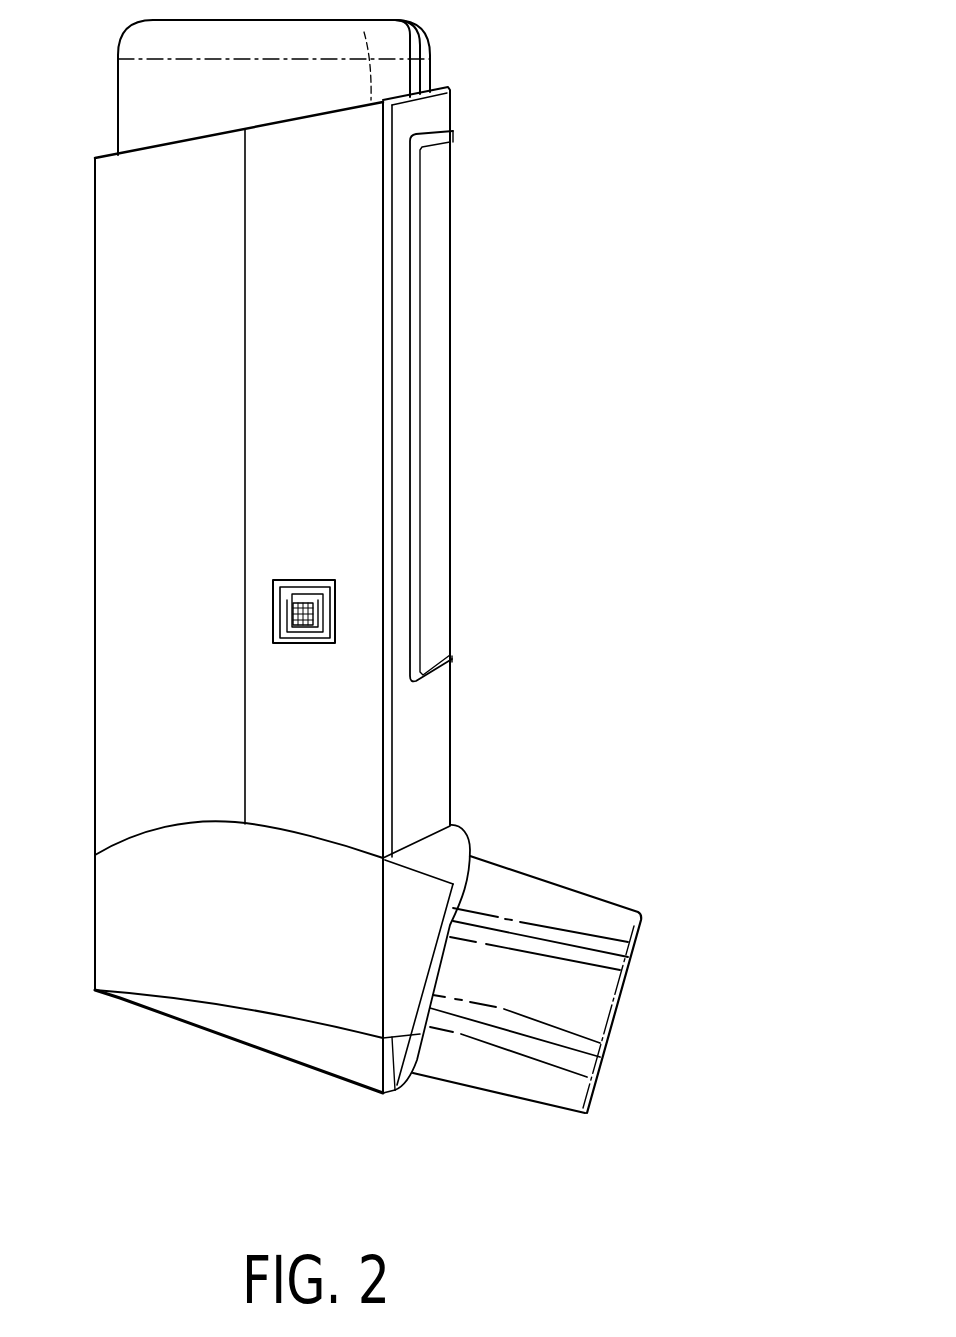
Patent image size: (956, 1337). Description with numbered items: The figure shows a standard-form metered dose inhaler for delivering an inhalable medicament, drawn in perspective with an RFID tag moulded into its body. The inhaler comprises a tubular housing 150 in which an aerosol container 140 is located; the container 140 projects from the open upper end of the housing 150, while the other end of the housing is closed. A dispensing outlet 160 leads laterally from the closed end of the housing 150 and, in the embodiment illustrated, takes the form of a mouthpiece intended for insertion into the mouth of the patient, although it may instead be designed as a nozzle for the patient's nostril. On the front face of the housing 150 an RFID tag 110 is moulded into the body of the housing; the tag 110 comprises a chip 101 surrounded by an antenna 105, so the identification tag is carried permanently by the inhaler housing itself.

The aerosol container 140 is at (428, 48).
The tubular housing 150 is at (450, 720).
The dispensing outlet 160 is at (613, 1037).
The antenna 105 is at (273, 582).
The RFID tag 110 is at (305, 570).
The chip 101 is at (318, 614).